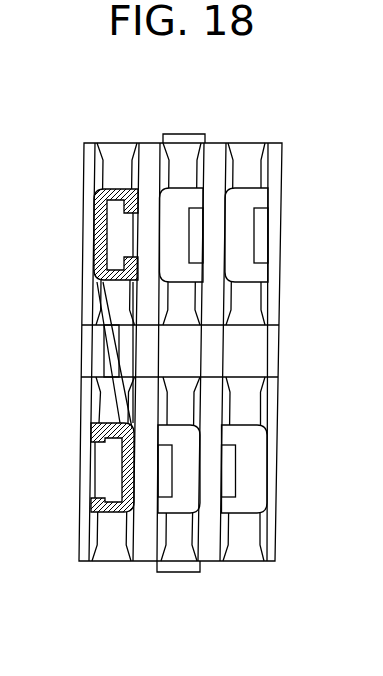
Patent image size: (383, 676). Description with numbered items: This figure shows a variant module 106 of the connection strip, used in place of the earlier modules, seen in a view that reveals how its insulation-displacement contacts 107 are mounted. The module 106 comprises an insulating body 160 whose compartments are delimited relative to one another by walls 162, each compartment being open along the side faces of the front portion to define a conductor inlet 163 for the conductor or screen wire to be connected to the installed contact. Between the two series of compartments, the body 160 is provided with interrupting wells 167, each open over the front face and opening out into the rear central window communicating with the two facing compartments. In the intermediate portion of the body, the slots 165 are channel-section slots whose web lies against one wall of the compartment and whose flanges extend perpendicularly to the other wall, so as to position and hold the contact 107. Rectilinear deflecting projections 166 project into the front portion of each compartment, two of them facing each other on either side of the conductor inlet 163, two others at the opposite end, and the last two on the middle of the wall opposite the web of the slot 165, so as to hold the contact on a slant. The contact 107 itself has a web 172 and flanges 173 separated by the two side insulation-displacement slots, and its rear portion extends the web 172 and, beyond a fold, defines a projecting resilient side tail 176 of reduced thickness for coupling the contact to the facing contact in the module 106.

The variant module 106 is at (291, 150).
The insulation-displacement contact 107 is at (93, 224).
The insulating body 160 is at (88, 143).
The walls 162 is at (218, 174).
The conductor inlet 163 is at (117, 157).
The channel-section slot 165 is at (243, 253).
The deflecting projections 166 is at (260, 217).
The interrupting well 167 is at (182, 136).
The web 172 is at (135, 470).
The flanges 173 is at (90, 437).
The resilient side tail 176 is at (111, 363).